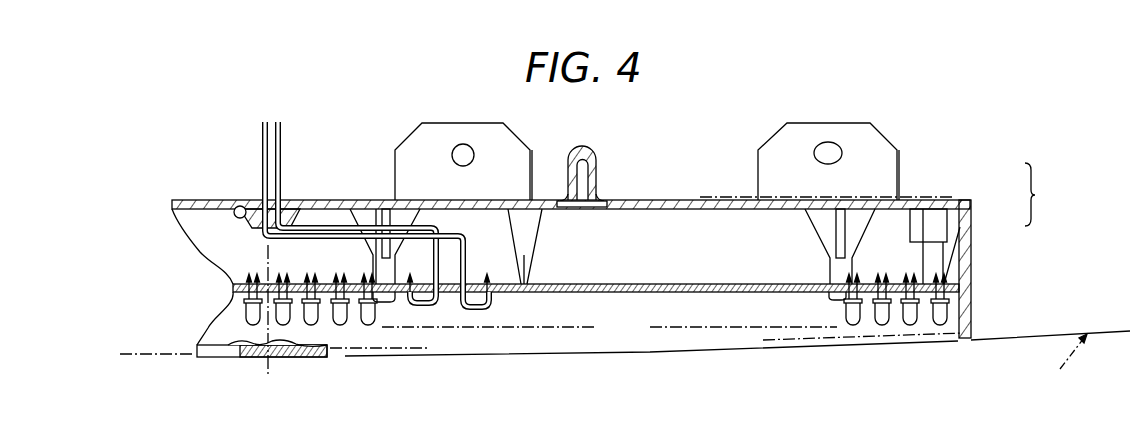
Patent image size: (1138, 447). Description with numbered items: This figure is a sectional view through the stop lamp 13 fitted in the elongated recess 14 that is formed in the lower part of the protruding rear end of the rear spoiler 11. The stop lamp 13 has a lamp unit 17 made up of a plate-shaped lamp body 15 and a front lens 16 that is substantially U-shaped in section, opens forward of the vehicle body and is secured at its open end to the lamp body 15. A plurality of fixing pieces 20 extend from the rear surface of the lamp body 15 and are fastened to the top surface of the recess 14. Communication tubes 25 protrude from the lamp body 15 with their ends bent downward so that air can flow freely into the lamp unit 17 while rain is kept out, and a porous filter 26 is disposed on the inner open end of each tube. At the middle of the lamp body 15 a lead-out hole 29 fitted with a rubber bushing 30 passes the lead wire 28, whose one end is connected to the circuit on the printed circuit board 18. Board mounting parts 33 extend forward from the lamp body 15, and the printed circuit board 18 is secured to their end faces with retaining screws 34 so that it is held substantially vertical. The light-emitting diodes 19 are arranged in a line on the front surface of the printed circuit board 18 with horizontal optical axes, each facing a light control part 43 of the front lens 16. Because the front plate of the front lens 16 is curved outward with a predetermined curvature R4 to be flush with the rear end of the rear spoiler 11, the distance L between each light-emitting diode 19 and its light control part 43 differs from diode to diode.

The rear spoiler 11 is at (1063, 362).
The stop lamp 13 is at (611, 397).
The elongated recess 14 is at (962, 340).
The lamp body 15 is at (961, 206).
The front lens 16 is at (973, 222).
The lamp unit 17 is at (1041, 194).
The printed circuit board 18 is at (234, 288).
The light-emitting diodes 19 is at (368, 326).
The fixing pieces 20 is at (504, 124).
The communication tubes 25 is at (597, 158).
The filter 26 is at (586, 208).
The lead wire 28 is at (270, 131).
The lead-wire lead-out hole 29 is at (243, 212).
The rubber bushing 30 is at (288, 203).
The board mounting parts 33 is at (529, 263).
The retaining screws 34 is at (384, 302).
The light control parts 43 is at (251, 346).
The predetermined curvature R4 is at (677, 349).
The distance between light-emitting diode and light control part L is at (267, 366).